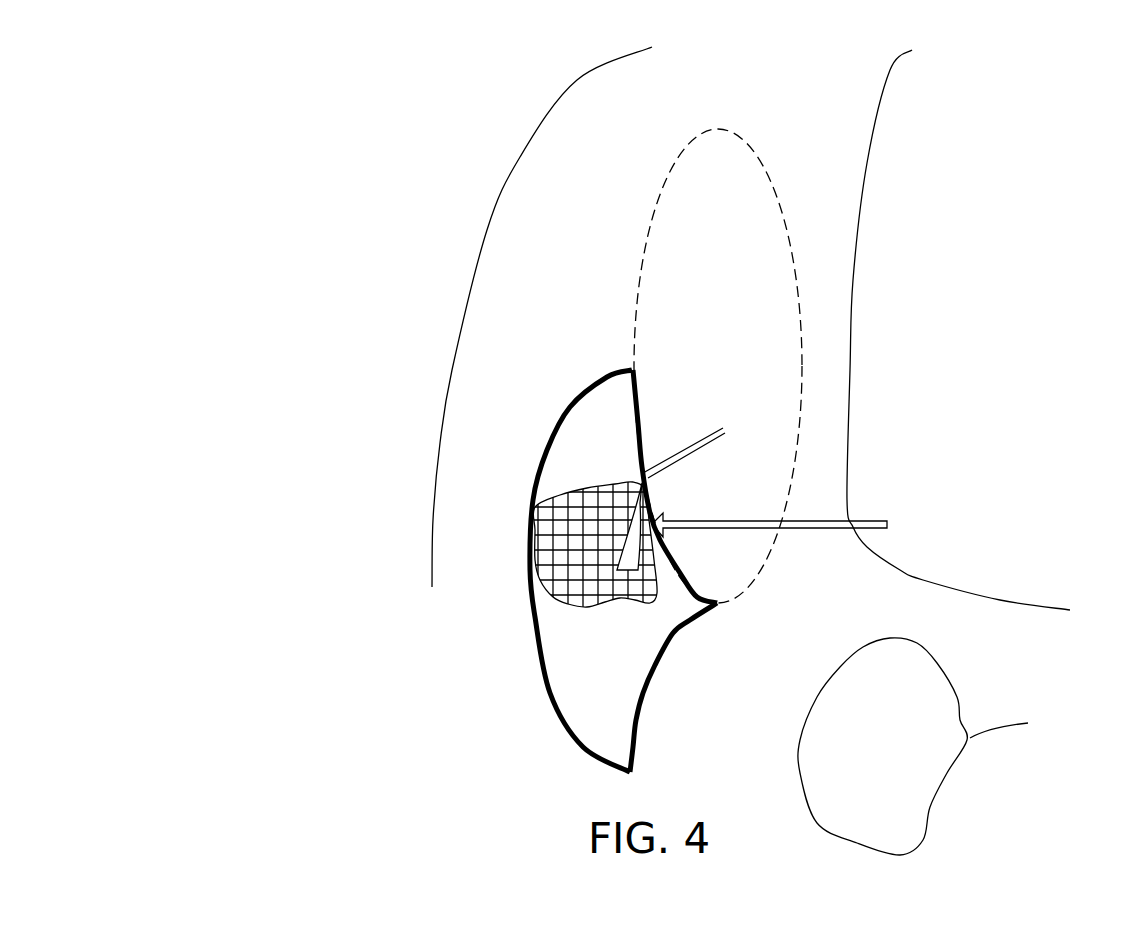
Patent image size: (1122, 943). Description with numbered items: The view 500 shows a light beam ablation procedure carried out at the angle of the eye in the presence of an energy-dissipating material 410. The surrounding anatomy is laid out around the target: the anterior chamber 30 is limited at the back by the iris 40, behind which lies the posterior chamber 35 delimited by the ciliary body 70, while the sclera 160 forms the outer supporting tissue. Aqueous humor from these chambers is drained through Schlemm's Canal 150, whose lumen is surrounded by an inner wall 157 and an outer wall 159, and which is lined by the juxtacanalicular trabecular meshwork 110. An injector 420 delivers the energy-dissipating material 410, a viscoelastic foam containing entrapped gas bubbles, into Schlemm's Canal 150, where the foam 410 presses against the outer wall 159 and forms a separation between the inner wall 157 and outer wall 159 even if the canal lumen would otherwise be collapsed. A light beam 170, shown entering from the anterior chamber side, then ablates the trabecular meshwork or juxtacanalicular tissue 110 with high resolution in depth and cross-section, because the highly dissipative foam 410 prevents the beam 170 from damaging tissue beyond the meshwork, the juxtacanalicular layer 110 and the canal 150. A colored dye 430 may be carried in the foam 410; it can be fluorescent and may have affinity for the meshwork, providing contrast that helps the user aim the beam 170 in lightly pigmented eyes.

The mounting system / assembly view 500 is at (282, 55).
The sclera 160 is at (587, 236).
The juxtacanalicular trabecular meshwork 110 is at (735, 336).
The anterior chamber 30 is at (1012, 366).
The iris 40 is at (1075, 662).
The ciliary body 70 is at (870, 744).
The posterior chamber 35 is at (1052, 816).
The Schlemm's Canal 150 is at (615, 684).
The inner wall 157 is at (633, 447).
The outer wall 159 is at (530, 622).
The energy-dissipating material 410 is at (547, 543).
The colored dye 430 is at (633, 560).
The injector 420 is at (718, 423).
The light beam 170 is at (742, 517).